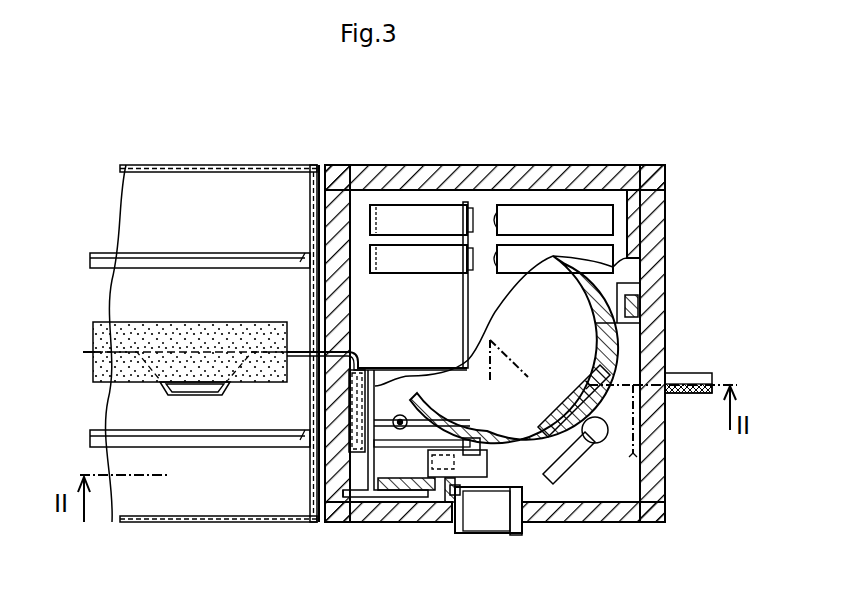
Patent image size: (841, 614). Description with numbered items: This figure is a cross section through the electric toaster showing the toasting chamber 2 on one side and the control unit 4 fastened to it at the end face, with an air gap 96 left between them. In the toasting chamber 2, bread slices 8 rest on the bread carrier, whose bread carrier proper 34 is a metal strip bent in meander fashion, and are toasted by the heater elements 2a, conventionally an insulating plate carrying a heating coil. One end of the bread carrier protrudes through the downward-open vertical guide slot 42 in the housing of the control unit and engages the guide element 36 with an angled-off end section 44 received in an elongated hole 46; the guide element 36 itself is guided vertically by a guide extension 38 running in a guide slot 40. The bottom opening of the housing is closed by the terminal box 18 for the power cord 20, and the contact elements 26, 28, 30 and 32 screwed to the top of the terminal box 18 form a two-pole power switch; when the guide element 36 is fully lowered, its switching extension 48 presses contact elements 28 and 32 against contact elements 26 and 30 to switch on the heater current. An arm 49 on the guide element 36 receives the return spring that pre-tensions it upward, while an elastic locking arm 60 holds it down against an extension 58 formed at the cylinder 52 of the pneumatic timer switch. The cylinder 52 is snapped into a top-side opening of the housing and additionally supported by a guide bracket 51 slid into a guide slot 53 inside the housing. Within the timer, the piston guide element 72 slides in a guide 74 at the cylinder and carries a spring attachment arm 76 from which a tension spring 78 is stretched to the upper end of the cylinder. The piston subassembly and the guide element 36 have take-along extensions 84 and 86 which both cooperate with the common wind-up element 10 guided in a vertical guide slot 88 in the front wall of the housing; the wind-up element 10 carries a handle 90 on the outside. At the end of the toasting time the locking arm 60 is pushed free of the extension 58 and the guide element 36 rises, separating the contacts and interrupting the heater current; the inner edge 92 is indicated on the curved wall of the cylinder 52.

The toasting chamber 2 is at (120, 245).
The heater elements 2a is at (218, 250).
The control unit 4 is at (668, 172).
The bread slices 8 is at (172, 330).
The wind-up element 10 is at (484, 533).
The terminal box 18 is at (648, 224).
The power cord 20 is at (688, 378).
The contact element 26 is at (528, 270).
The contact element 28 is at (418, 270).
The contact element 30 is at (558, 231).
The contact element 32 is at (418, 231).
The bread carrier proper 34 is at (168, 388).
The guide element 36 is at (330, 478).
The guide extension 38 is at (376, 500).
The guide slot 40 is at (422, 502).
The vertical guide slot 42 is at (314, 348).
The angled-off end section 44 is at (372, 354).
The elongated hole 46 is at (352, 414).
The switching extension 48 is at (458, 348).
The arm 49 is at (358, 500).
The guide bracket 51 is at (650, 319).
The cylinder 52 is at (578, 306).
The guide slot 53 is at (658, 294).
The extension 58 is at (468, 420).
The locking arm 60 is at (410, 477).
The piston guide element 72 is at (562, 375).
The guide 74 is at (594, 380).
The spring attachment arm 76 is at (605, 428).
The tension spring 78 is at (600, 444).
The take-along extension 84 is at (572, 470).
The take-along extension 86 is at (415, 414).
The vertical guide slot 88 is at (514, 535).
The handle 90 is at (462, 534).
The inner edge 92 is at (502, 432).
The air gap 96 is at (333, 165).